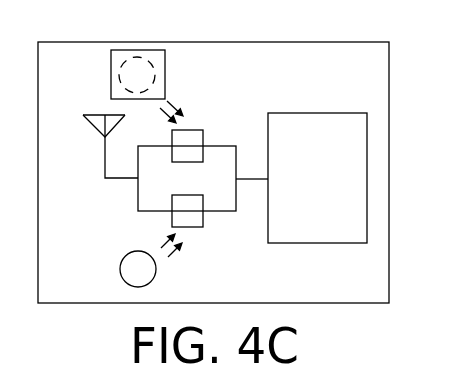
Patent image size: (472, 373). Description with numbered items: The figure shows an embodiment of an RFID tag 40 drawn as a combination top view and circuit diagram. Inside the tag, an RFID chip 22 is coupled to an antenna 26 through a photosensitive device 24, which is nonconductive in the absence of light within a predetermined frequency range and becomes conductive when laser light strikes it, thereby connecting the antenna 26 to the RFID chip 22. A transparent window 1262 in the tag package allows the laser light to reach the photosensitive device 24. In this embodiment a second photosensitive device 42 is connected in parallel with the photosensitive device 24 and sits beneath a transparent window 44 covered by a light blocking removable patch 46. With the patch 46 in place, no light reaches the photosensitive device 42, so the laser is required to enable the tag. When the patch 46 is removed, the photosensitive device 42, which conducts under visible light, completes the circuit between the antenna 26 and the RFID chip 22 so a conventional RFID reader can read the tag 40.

The RFID tag 40 is at (105, 42).
The RFID chip 22 is at (322, 113).
The second photosensitive device 42 is at (186, 130).
The photosensitive device 24 is at (184, 227).
The antenna 26 is at (93, 123).
The light blocking removable patch 46 is at (111, 90).
The transparent window 44 is at (155, 80).
The transparent window 1262 is at (120, 266).